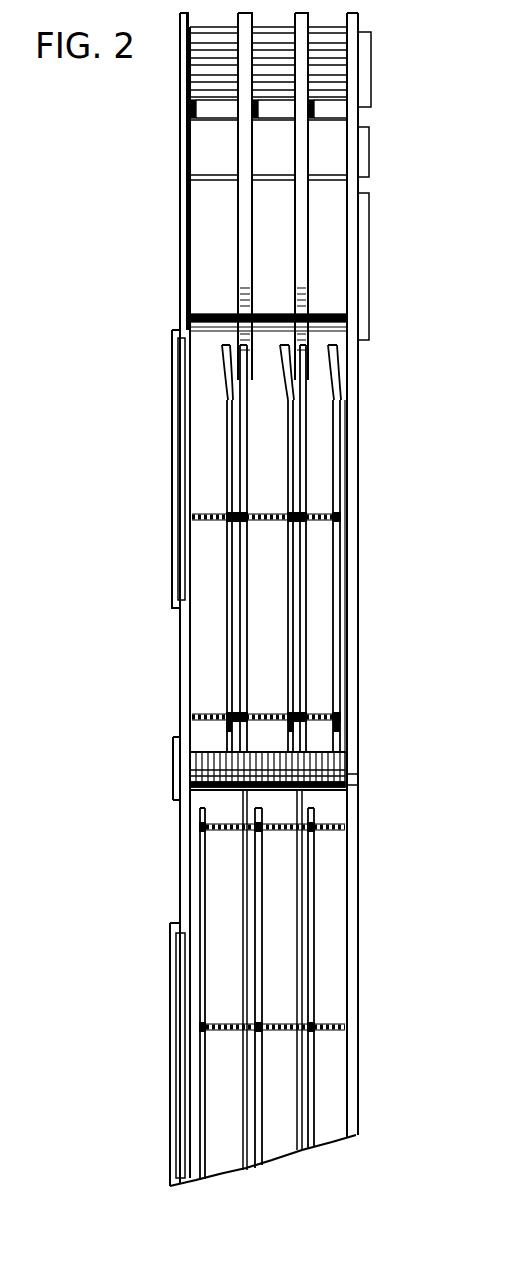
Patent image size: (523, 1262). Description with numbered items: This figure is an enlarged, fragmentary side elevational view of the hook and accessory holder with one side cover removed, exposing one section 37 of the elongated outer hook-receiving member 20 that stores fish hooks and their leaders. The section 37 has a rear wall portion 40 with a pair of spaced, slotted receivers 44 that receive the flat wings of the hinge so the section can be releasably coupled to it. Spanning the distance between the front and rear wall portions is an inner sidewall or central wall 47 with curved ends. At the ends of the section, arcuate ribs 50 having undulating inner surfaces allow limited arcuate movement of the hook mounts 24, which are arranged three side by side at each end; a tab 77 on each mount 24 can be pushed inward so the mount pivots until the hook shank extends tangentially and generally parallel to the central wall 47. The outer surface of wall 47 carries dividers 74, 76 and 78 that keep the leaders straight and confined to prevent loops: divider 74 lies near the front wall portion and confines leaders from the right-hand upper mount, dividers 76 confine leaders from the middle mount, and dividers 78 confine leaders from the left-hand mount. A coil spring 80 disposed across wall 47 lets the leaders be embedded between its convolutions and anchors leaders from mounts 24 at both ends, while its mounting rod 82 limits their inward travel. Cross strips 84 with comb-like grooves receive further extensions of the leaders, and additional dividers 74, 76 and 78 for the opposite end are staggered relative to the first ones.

The outer hook-receiving member 20 is at (180, 650).
The hook mount 24 is at (224, 168).
The section 37 is at (370, 384).
The rear wall portion 40 is at (180, 233).
The slotted receiver 44 is at (172, 375).
The inner sidewall 47 is at (328, 490).
The arcuate rib 50 is at (237, 258).
The divider 74 is at (340, 557).
The divider 76 is at (290, 603).
The tab 77 is at (252, 112).
The divider 78 is at (240, 557).
The coil spring 80 is at (340, 752).
The mounting rod 82 is at (358, 780).
The cross strip 84 is at (206, 517).